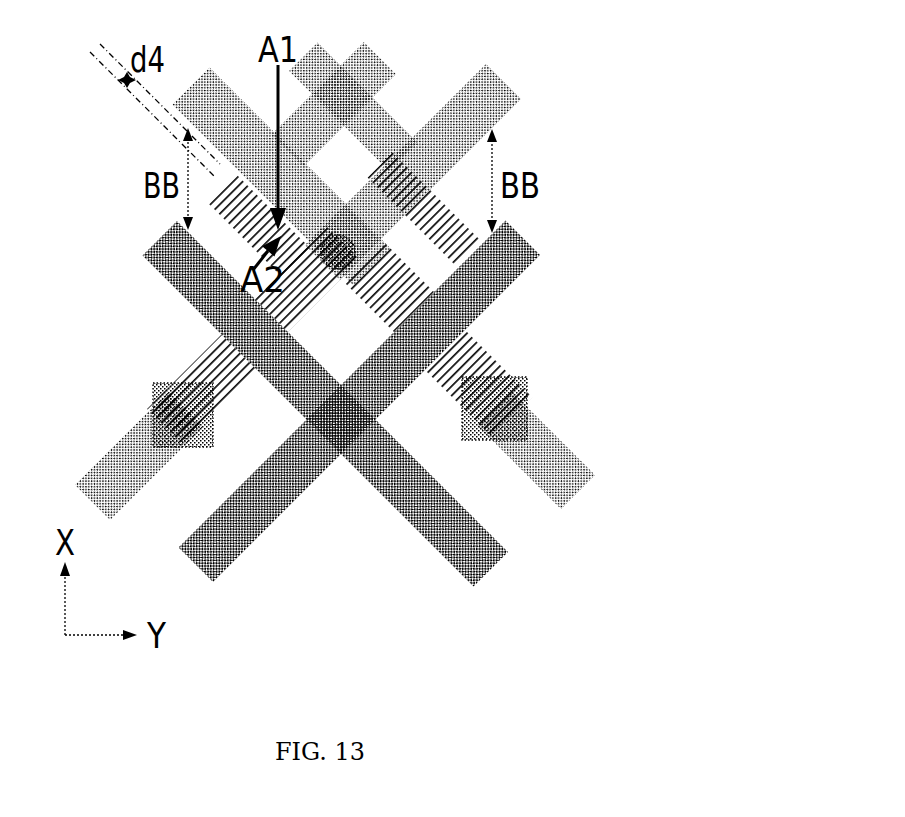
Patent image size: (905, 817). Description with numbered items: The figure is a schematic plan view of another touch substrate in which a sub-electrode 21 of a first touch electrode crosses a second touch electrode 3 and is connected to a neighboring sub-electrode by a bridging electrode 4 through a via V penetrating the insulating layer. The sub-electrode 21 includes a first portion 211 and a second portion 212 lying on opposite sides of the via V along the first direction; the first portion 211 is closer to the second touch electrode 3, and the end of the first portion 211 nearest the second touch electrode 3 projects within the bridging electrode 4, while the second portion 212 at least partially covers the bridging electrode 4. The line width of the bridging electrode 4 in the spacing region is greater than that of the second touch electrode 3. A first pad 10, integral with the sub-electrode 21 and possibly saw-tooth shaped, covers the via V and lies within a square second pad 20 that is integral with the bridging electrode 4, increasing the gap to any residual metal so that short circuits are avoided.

The second touch electrode 3 is at (237, 560).
The bridging electrode 4 is at (215, 352).
The first pad 10 is at (185, 405).
The second pad 20 is at (158, 385).
The sub-electrode 21 is at (508, 80).
The first portion 211 is at (372, 279).
The second portion 212 is at (393, 112).
The via V is at (362, 259).